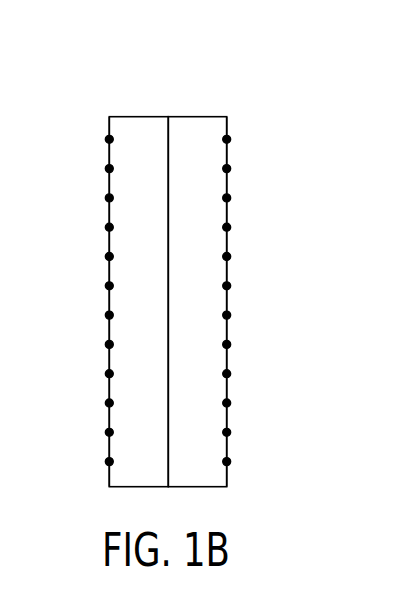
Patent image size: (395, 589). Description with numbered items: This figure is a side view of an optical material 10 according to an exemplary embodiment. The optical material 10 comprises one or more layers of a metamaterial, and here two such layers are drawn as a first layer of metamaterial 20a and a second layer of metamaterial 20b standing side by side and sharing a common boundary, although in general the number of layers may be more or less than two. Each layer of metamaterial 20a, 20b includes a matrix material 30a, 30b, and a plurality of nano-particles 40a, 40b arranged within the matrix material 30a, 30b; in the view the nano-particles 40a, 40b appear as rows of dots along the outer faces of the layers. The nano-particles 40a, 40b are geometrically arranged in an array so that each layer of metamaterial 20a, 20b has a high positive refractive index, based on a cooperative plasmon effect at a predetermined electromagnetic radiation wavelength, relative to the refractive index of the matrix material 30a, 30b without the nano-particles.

The optical material 10 is at (311, 55).
The layer of metamaterial 20a is at (132, 117).
The layer of metamaterial 20b is at (208, 116).
The matrix material 30a is at (118, 180).
The matrix material 30b is at (220, 182).
The nano-particles 40a is at (109, 139).
The nano-particles 40b is at (227, 139).